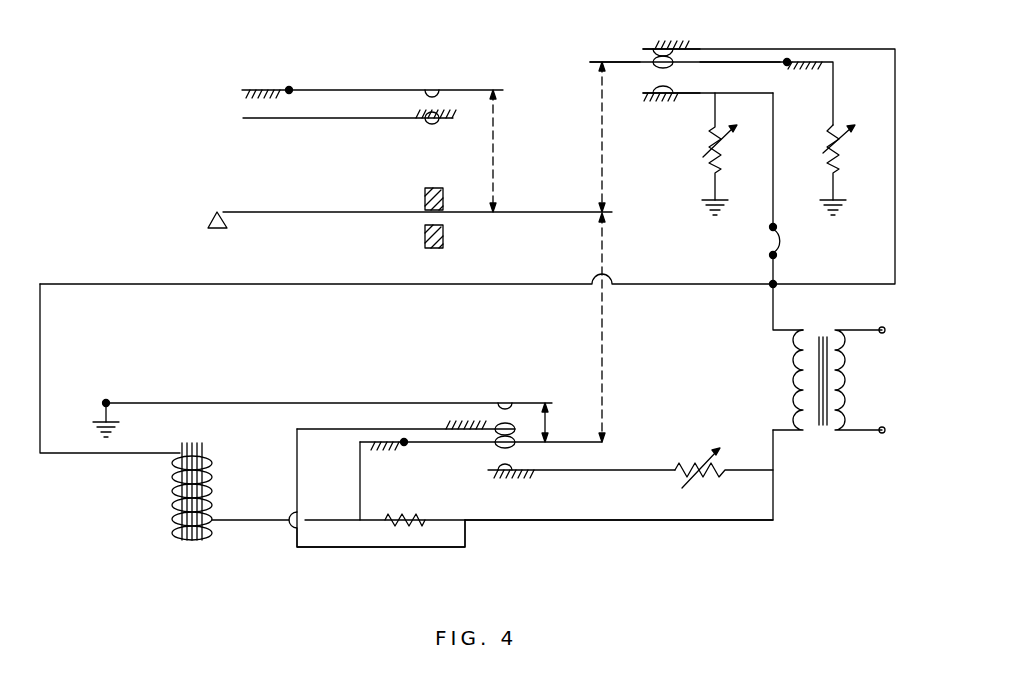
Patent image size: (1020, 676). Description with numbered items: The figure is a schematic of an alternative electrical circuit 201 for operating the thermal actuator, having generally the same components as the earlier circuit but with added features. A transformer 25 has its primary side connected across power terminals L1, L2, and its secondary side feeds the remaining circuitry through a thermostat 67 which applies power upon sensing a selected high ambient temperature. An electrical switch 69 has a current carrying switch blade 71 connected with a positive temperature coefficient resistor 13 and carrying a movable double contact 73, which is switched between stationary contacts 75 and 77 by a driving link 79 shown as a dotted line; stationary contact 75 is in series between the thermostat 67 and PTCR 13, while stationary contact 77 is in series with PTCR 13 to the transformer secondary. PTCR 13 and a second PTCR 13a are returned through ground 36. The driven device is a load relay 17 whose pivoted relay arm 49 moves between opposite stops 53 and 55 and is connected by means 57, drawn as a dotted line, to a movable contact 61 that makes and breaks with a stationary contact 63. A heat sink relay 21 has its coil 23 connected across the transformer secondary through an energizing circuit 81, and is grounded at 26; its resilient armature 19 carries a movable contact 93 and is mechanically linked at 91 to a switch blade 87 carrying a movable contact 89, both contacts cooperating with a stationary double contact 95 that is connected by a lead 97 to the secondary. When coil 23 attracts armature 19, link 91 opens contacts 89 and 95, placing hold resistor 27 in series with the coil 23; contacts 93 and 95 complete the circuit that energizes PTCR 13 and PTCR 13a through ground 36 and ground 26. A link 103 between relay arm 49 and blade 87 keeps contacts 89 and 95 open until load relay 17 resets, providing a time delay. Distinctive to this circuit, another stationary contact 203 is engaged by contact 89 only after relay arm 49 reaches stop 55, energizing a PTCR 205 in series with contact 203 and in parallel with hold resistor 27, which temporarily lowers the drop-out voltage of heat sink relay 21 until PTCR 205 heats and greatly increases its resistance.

The electrical circuit 201 is at (195, 122).
The movable contact 61 is at (433, 84).
The stationary contact 63 is at (432, 123).
The driven device 17 is at (298, 222).
The relay arm 49 is at (348, 215).
The stop 53 is at (433, 188).
The stop 55 is at (446, 235).
The connecting means 57 is at (497, 153).
The driving link 79 is at (600, 175).
The link 103 is at (605, 345).
The electrical switch 69 is at (607, 52).
The stationary contact 77 is at (663, 47).
The movable contact 73 is at (672, 68).
The switch blade 71 is at (732, 65).
The stationary contact 75 is at (669, 101).
The positive temperature coefficient resistor 13a is at (705, 160).
The positive temperature coefficient resistor 13 is at (825, 160).
The ground 36 is at (704, 213).
The thermostat 67 is at (787, 238).
The armature 19 is at (257, 402).
The ground 26 is at (95, 432).
The movable contact 93 is at (505, 398).
The stationary double contact 95 is at (498, 424).
The switch blade 87 is at (433, 443).
The movable contact 89 is at (500, 448).
The link 91 is at (548, 420).
The stationary contact 203 is at (503, 478).
The positive temperature coefficient resistor 205 is at (686, 464).
The lead 97 is at (650, 522).
The hold resistor 27 is at (407, 516).
The energizing circuit 81 is at (355, 557).
The coil 23 is at (172, 493).
The heat sink relay 21 is at (173, 538).
The transformer 25 is at (824, 434).
The power terminal L1 is at (887, 328).
The power terminal L2 is at (885, 434).